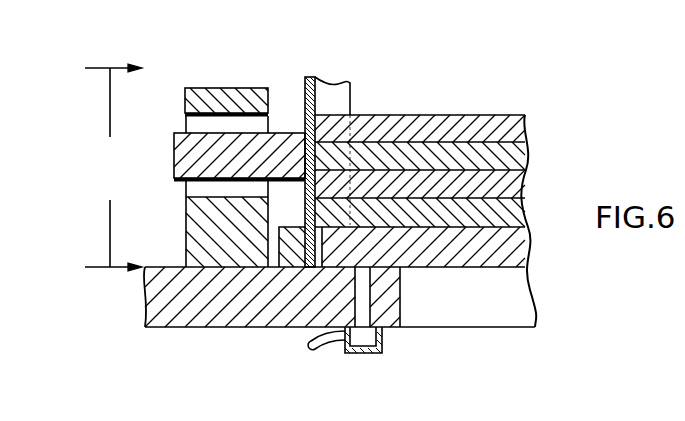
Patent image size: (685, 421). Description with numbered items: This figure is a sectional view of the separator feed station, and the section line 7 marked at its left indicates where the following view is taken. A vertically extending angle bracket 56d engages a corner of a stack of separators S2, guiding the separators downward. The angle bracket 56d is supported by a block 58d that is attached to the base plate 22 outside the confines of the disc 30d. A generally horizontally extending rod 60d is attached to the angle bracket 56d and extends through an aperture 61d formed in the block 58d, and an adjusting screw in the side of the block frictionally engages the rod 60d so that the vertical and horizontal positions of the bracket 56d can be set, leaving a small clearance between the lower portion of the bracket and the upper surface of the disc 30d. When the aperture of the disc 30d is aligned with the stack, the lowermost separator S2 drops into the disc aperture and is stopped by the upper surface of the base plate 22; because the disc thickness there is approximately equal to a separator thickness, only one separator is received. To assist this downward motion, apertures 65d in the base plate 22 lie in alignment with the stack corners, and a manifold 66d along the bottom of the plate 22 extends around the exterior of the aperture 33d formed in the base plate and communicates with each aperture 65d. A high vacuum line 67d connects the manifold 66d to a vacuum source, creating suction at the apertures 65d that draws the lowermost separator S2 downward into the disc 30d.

The section line 7— 7 is at (103, 169).
The block 58d is at (232, 98).
The angle bracket 56d is at (307, 92).
The stack of separators S2 is at (423, 125).
The rod 60d is at (193, 153).
The aperture 61d is at (193, 189).
The disc 30d is at (293, 270).
The base plate 22 is at (195, 310).
The aperture 33d is at (518, 308).
The apertures 65d is at (363, 298).
The manifold 66d is at (371, 355).
The high vacuum line 67d is at (316, 349).